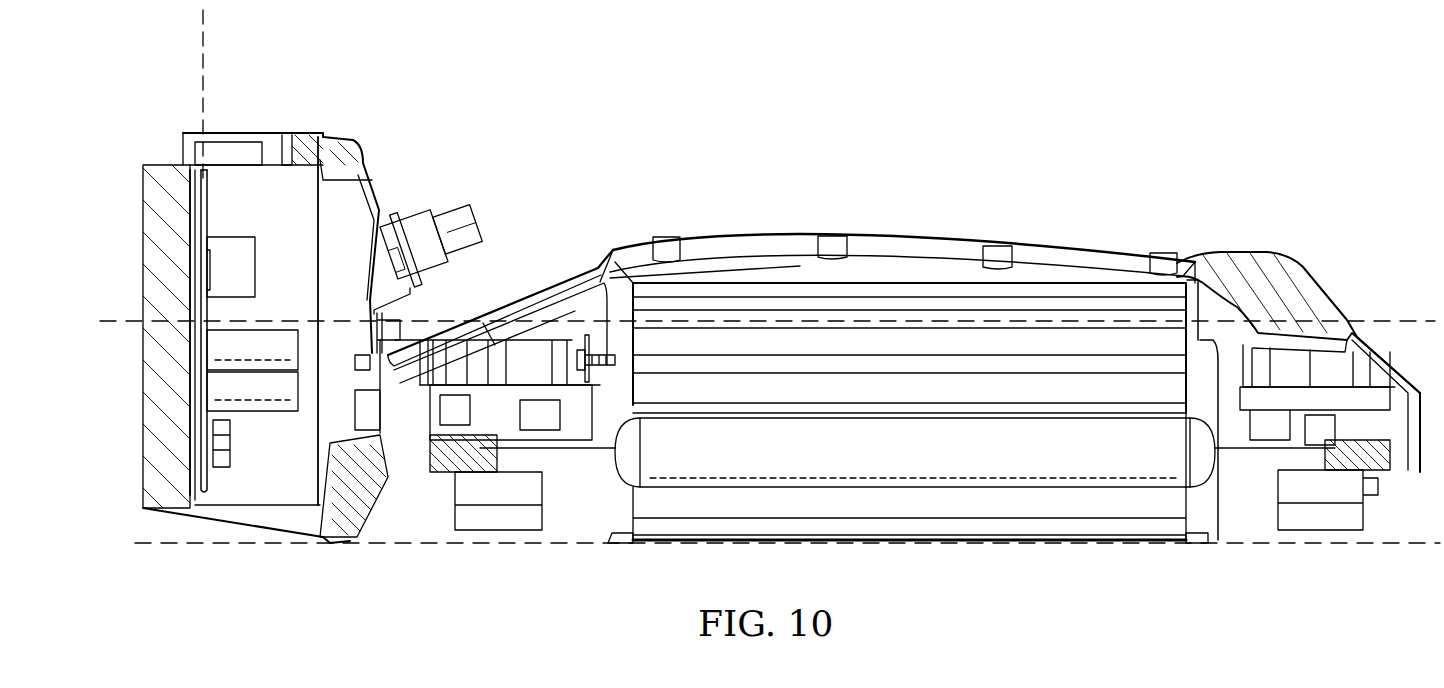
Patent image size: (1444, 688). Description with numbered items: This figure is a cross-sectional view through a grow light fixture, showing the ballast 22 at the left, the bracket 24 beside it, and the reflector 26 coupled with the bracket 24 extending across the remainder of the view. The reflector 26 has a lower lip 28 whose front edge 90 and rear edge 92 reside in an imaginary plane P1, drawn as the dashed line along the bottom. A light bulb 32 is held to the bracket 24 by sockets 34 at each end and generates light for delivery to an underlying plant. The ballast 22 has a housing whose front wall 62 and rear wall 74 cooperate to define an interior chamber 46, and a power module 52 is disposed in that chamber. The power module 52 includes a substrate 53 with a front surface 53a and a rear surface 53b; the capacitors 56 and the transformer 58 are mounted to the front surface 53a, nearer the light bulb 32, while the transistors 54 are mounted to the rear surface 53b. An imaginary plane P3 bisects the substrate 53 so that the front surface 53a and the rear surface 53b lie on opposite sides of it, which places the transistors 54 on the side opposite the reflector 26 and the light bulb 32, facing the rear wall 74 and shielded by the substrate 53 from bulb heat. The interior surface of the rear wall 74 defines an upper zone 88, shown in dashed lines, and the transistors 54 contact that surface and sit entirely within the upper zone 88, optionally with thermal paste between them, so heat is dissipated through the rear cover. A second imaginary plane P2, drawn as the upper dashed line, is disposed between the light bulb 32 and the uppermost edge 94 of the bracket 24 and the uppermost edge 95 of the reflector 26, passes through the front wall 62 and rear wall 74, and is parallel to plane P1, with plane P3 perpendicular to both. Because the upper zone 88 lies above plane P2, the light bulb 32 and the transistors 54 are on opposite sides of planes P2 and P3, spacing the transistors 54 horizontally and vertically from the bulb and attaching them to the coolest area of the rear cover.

The ballast 22 is at (274, 127).
The bracket 24 is at (504, 292).
The reflector 26 is at (808, 400).
The lower lip 28 is at (978, 545).
The light bulb 32 is at (984, 408).
The sockets 34 is at (562, 468).
The interior chamber 46 is at (285, 283).
The power module 52 is at (218, 480).
The substrate 53 is at (205, 462).
The front surface 53a is at (208, 182).
The rear surface 53b is at (200, 384).
The transistors 54 is at (190, 198).
The capacitors 56 is at (273, 410).
The transformer 58 is at (228, 237).
The front wall 62 is at (366, 212).
The rear wall 74 is at (190, 176).
The upper zone 88 is at (180, 222).
The front edge 90 is at (1200, 543).
The rear edge 92 is at (626, 543).
The uppermost edge 94 is at (862, 243).
The uppermost edge 95 is at (745, 287).
The imaginary plane P1 is at (540, 550).
The second imaginary plane P2 is at (1362, 316).
The imaginary plane P3 is at (197, 50).